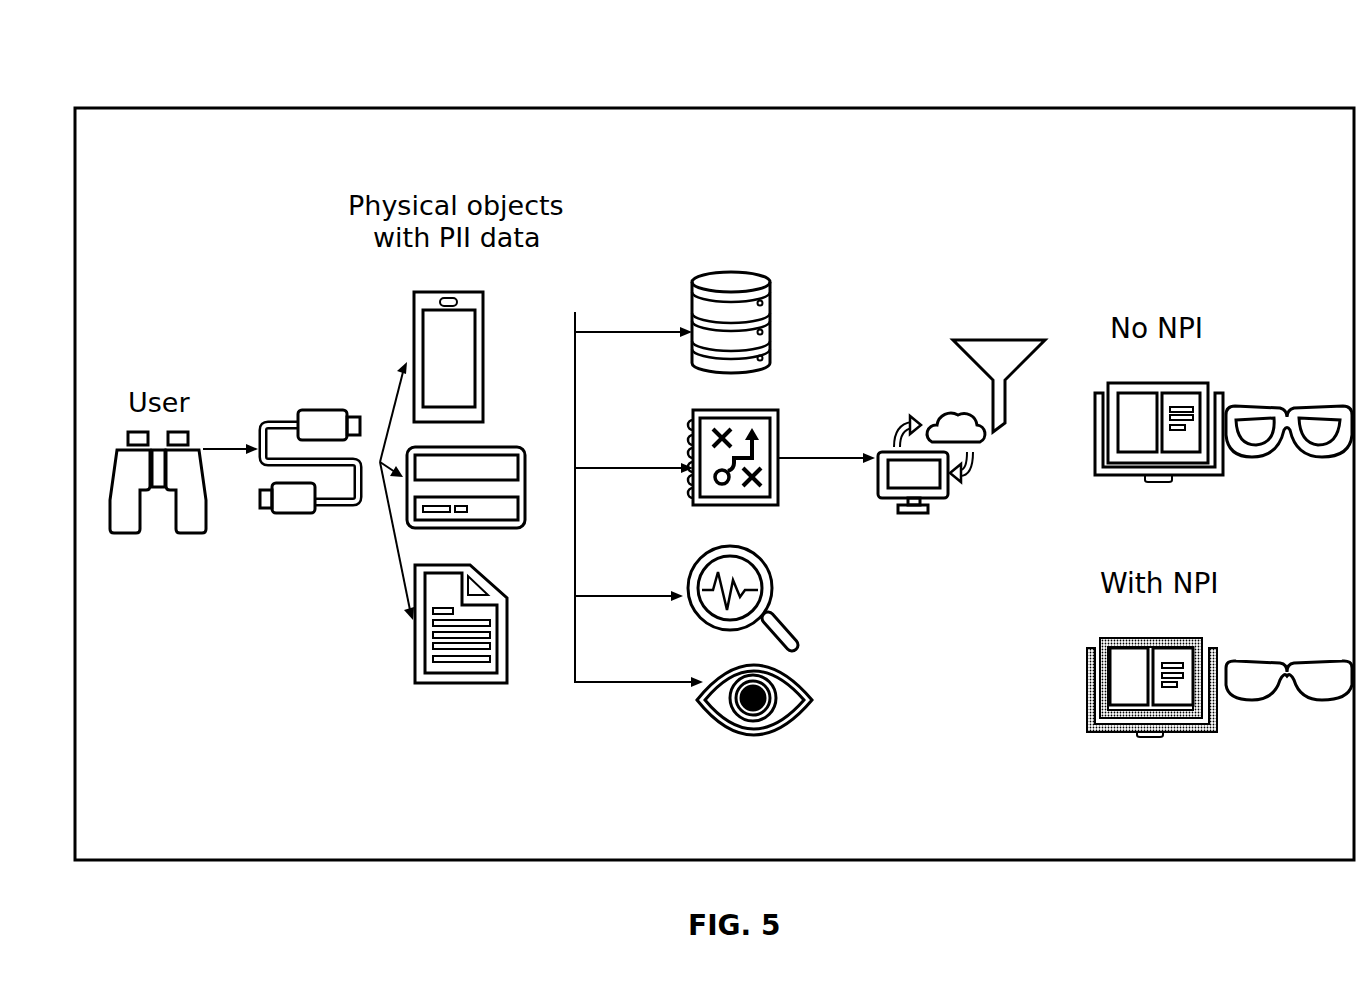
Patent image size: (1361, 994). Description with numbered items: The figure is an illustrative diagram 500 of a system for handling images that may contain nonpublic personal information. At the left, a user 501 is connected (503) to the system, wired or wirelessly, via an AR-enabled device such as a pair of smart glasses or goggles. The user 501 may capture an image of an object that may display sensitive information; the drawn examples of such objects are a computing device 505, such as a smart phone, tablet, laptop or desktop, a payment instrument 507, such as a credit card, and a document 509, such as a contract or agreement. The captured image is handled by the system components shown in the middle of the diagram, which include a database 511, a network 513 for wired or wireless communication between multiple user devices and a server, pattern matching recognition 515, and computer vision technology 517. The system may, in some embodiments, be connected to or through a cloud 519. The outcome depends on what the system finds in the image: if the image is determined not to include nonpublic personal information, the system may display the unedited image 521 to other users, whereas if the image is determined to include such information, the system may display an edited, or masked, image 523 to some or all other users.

The illustrative diagram 500 is at (157, 51).
The user 501 is at (125, 533).
The connection 503 is at (297, 513).
The computing device 505 is at (448, 292).
The payment instrument 507 is at (487, 447).
The document 509 is at (485, 575).
The database 511 is at (732, 268).
The network 513 is at (735, 410).
The pattern matching recognition 515 is at (733, 549).
The computer vision technology 517 is at (748, 667).
The cloud 519 is at (975, 470).
The unedited image 521 is at (1158, 383).
The edited or masked image 523 is at (1153, 638).